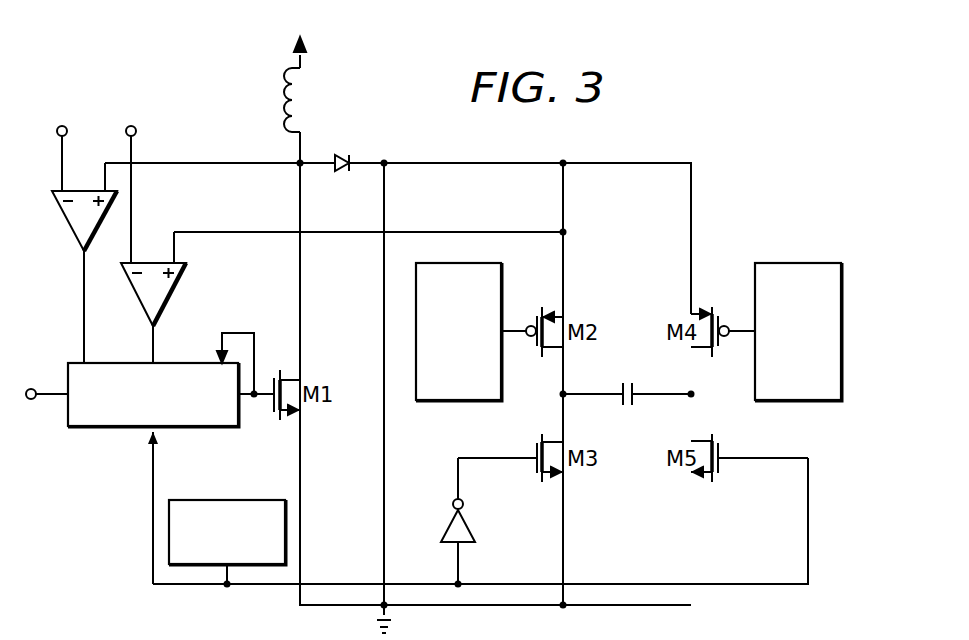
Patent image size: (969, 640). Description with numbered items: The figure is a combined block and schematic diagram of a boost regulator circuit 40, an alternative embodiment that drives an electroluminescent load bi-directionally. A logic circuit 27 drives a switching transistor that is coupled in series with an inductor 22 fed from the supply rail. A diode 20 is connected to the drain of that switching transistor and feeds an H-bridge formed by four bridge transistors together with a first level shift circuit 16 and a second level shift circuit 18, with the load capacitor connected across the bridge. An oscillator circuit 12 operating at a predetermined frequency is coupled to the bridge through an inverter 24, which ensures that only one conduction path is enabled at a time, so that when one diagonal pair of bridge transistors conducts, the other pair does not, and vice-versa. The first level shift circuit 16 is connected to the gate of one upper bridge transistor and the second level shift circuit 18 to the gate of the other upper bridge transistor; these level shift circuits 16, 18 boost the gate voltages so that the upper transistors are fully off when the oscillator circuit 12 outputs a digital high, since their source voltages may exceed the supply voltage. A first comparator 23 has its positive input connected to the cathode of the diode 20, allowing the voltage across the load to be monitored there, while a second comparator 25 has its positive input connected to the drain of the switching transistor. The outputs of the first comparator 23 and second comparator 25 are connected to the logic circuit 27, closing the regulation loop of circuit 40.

The oscillator circuit 12 is at (222, 498).
The first level shift circuit 16 is at (469, 390).
The second level shift circuit 18 is at (809, 390).
The diode 20 is at (345, 152).
The inductor 22 is at (300, 100).
The first comparator 23 is at (135, 290).
The inverter 24 is at (473, 525).
The second comparator 25 is at (66, 216).
The logic circuit 27 is at (125, 428).
The boost regulator circuit 40 is at (786, 132).